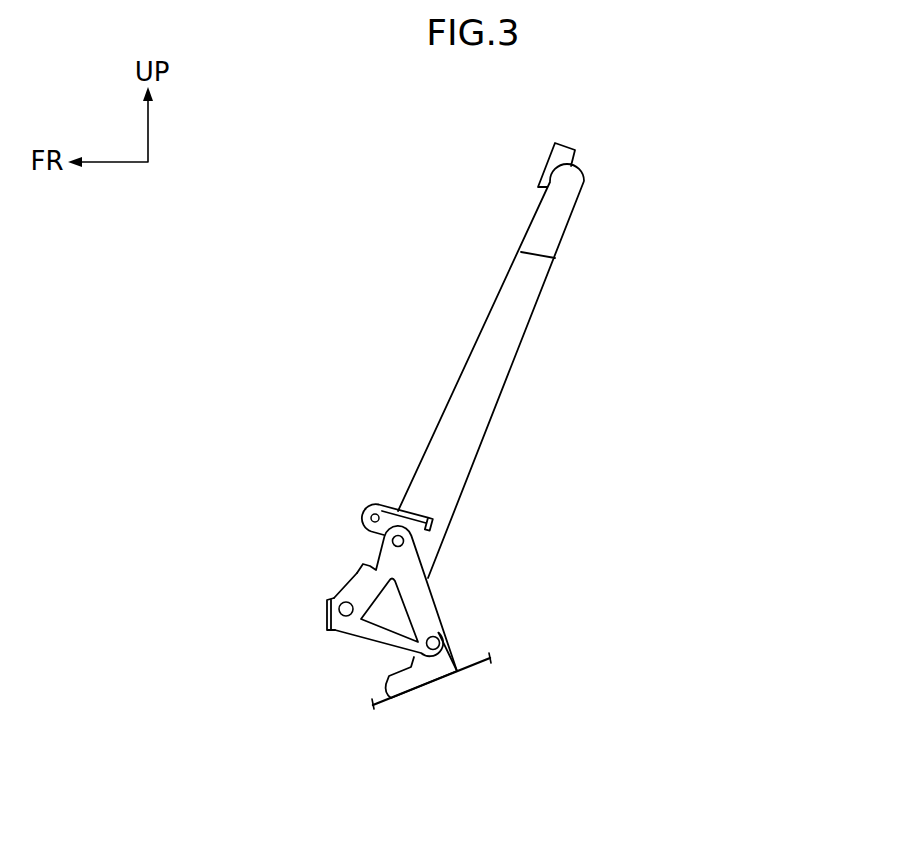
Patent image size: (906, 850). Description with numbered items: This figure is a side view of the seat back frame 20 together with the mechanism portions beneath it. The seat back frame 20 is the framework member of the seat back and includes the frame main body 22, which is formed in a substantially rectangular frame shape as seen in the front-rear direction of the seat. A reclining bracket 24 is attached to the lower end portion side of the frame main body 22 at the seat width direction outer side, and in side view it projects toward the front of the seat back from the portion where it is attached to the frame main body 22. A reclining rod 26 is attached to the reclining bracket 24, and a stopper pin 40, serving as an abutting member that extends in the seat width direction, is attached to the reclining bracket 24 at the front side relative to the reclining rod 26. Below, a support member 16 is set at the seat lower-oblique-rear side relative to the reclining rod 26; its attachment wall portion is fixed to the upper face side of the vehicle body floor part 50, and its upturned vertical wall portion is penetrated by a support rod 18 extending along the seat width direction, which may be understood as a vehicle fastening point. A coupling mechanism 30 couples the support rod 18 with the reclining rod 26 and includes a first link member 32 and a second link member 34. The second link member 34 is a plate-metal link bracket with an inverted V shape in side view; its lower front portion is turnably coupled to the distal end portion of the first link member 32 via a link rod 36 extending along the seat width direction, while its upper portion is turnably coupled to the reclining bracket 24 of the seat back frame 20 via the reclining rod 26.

The support member 16 is at (467, 651).
The support rod 18 is at (437, 623).
The seat back frame 20 is at (435, 387).
The frame main body 22 is at (494, 304).
The reclining bracket 24 is at (414, 510).
The reclining rod 26 is at (404, 537).
The coupling mechanism 30 is at (444, 594).
The first link member 32 is at (378, 648).
The second link member 34 is at (343, 577).
The link rod 36 is at (326, 612).
The stopper pin 40 is at (371, 504).
The vehicle body floor part 50 is at (492, 655).